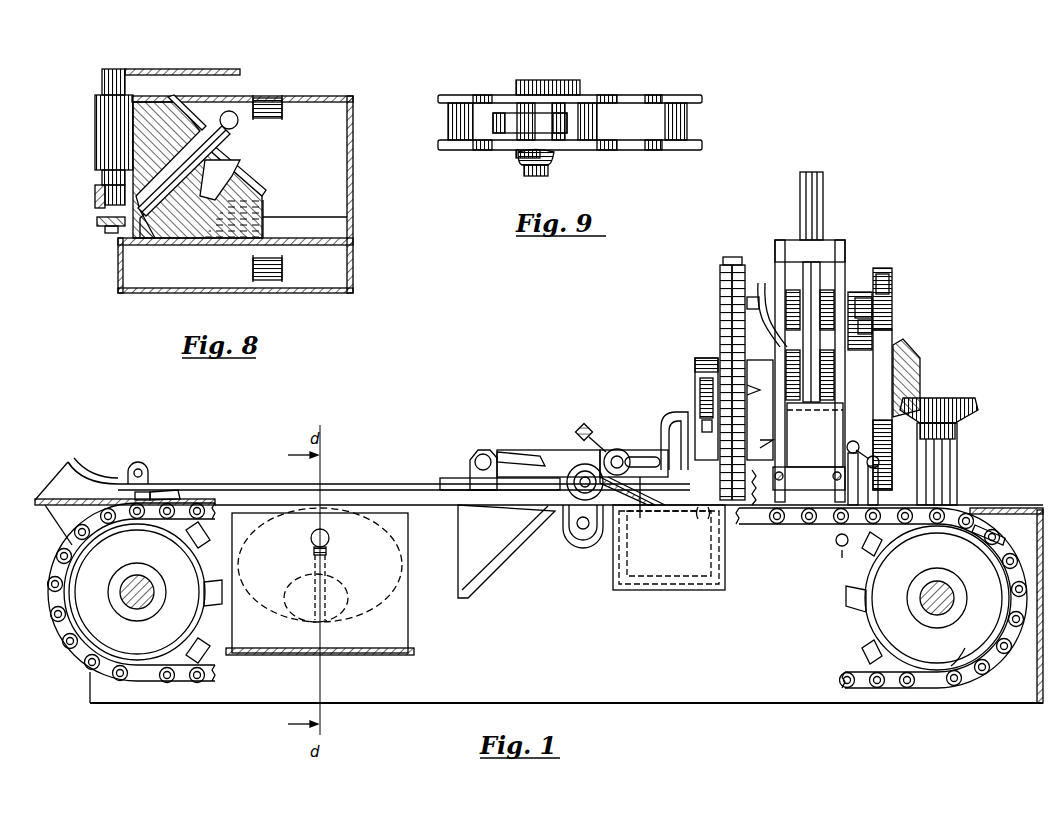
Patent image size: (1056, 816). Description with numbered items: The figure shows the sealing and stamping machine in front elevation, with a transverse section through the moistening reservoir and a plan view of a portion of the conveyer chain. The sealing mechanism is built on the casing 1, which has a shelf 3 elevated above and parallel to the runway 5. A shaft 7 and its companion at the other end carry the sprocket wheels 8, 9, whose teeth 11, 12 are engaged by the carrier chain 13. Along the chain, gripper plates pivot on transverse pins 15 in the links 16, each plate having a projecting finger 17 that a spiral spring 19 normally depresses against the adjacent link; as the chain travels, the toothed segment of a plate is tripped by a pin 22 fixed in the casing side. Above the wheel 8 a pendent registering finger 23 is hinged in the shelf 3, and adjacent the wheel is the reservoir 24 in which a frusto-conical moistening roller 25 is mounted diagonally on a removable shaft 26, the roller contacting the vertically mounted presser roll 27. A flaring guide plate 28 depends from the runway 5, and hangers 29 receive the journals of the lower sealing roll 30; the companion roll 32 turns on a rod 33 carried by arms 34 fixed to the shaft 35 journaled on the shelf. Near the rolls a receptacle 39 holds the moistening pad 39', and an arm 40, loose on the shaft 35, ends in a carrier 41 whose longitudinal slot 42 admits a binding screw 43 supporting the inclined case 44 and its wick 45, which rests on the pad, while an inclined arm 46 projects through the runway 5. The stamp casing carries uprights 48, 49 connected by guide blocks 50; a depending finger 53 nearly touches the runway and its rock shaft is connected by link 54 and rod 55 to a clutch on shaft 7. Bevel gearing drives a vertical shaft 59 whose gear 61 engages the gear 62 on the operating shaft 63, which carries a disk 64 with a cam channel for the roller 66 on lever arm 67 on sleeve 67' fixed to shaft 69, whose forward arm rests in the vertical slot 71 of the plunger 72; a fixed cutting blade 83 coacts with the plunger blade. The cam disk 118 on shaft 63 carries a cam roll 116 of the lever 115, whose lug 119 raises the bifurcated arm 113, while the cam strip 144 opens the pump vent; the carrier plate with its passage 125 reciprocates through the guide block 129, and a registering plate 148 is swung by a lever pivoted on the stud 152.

In FIG. 8, the casing 1 is at (322, 100).
In FIG. 1, the casing 1 is at (572, 606).
In FIG. 8, the shelf 3 is at (165, 72).
In FIG. 1, the shelf 3 is at (412, 486).
In FIG. 1, the runway 5 is at (42, 499).
In FIG. 1, the shaft 7 is at (946, 590).
In FIG. 1, the sprocket wheel 8 is at (195, 565).
In FIG. 1, the sprocket wheel 9 is at (872, 609).
In FIG. 1, the teeth 11 is at (210, 540).
In FIG. 1, the teeth 12 is at (850, 600).
In FIG. 8, the carrier chain 13 is at (270, 98).
In FIG. 1, the carrier chain 13 is at (60, 546).
In FIG. 9, the transverse pin 15 is at (548, 172).
In FIG. 1, the transverse pin 15 is at (968, 652).
In FIG. 9, the link 16 is at (600, 93).
In FIG. 1, the link 16 is at (58, 575).
In FIG. 9, the finger 17 is at (503, 113).
In FIG. 1, the finger 17 is at (165, 500).
In FIG. 9, the spiral spring 19 is at (518, 158).
In FIG. 1, the pin 22 is at (842, 559).
In FIG. 1, the registering finger 23 is at (135, 497).
In FIG. 8, the reservoir 24 is at (188, 114).
In FIG. 8, the moistening roller 25 is at (231, 197).
In FIG. 1, the moistening roller 25 is at (350, 606).
In FIG. 8, the shaft 26 is at (224, 117).
In FIG. 1, the shaft 26 is at (329, 538).
In FIG. 8, the presser roll 27 is at (95, 130).
In FIG. 1, the guide plate 28 is at (458, 539).
In FIG. 1, the hangers 29 is at (576, 525).
In FIG. 1, the lower sealing roll 30 is at (582, 547).
In FIG. 1, the companion roll 32 is at (562, 488).
In FIG. 1, the rod 33 is at (580, 476).
In FIG. 1, the arms 34 is at (518, 454).
In FIG. 1, the shaft 35 is at (475, 460).
In FIG. 1, the receptacle 39 is at (669, 563).
In FIG. 1, the moistening pad 39' is at (669, 566).
In FIG. 1, the arm 40 is at (529, 448).
In FIG. 1, the carrier 41 is at (652, 503).
In FIG. 1, the longitudinal slot 42 is at (632, 456).
In FIG. 1, the binding screw 43 is at (612, 450).
In FIG. 1, the inclined case 44 is at (632, 491).
In FIG. 1, the wick 45 is at (580, 428).
In FIG. 1, the inclined arm 46 is at (695, 521).
In FIG. 1, the upright 48 is at (845, 247).
In FIG. 1, the upright 49 is at (775, 250).
In FIG. 1, the guide block 50 is at (828, 240).
In FIG. 1, the depending finger 53 is at (848, 495).
In FIG. 1, the link 54 is at (862, 437).
In FIG. 1, the rod 55 is at (880, 460).
In FIG. 1, the shaft 59 is at (957, 436).
In FIG. 1, the gear 61 is at (968, 403).
In FIG. 1, the gear 62 is at (918, 356).
In FIG. 1, the operating shaft 63 is at (873, 392).
In FIG. 1, the disk 64 is at (892, 278).
In FIG. 1, the roller 66 is at (872, 335).
In FIG. 1, the lever arm 67 is at (887, 307).
In FIG. 1, the sleeve 67' is at (893, 269).
In FIG. 1, the shaft 69 is at (872, 327).
In FIG. 1, the vertical slot 71 is at (812, 277).
In FIG. 1, the plunger 72 is at (816, 172).
In FIG. 1, the cutting blade 83 is at (808, 485).
In FIG. 1, the bifurcated arm 113 is at (668, 416).
In FIG. 1, the lever 115 is at (700, 380).
In FIG. 1, the cam roll 116 is at (710, 358).
In FIG. 1, the cam disk 118 is at (720, 295).
In FIG. 1, the lug 119 is at (702, 420).
In FIG. 1, the passage 125 is at (752, 505).
In FIG. 1, the guide block 129 is at (760, 436).
In FIG. 1, the cam strip 144 is at (728, 242).
In FIG. 1, the registering plate 148 is at (815, 435).
In FIG. 1, the stud 152 is at (758, 322).